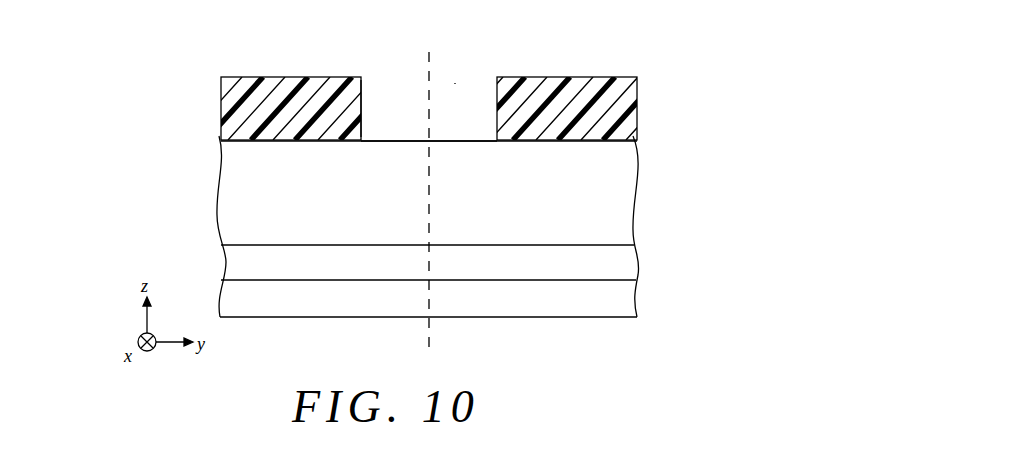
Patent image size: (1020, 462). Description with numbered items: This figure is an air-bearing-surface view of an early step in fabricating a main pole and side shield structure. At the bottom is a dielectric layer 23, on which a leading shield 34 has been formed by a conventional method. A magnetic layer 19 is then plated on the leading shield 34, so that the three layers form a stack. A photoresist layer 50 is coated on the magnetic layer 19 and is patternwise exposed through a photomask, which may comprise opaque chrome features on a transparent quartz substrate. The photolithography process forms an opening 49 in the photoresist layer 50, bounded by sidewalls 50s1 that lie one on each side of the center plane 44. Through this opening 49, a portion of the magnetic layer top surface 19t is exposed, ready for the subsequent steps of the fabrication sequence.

The magnetic layer 19 is at (617, 196).
The magnetic layer top surface 19t is at (388, 141).
The dielectric layer 23 is at (622, 294).
The leading shield 34 is at (622, 257).
The center plane 44 is at (429, 207).
The opening 49 is at (455, 83).
The photoresist layer 50 is at (238, 112).
The sidewalls 50s1 is at (364, 98).